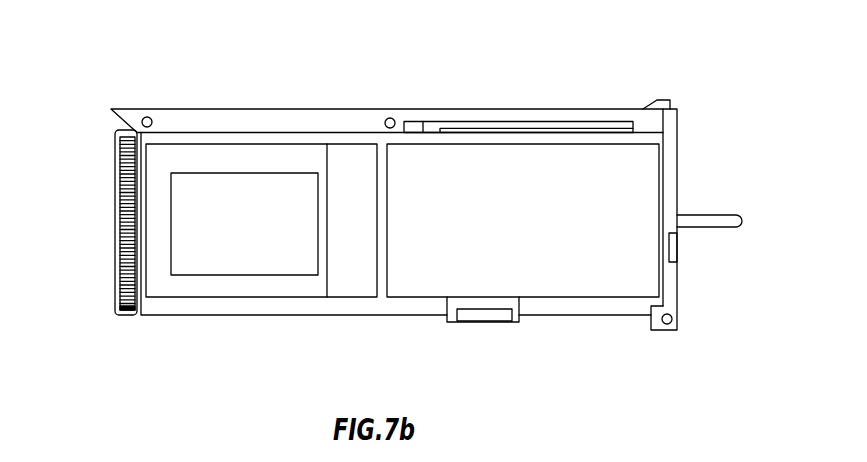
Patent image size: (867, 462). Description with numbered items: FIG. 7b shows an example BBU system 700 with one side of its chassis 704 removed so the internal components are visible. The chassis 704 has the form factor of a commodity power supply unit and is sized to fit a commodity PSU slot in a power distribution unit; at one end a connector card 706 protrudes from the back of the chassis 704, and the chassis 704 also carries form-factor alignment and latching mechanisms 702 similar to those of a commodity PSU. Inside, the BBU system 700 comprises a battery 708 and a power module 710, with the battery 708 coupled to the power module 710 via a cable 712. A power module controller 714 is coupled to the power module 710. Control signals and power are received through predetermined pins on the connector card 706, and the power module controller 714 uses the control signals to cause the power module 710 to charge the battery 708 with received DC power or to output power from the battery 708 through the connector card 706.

The BBU system 700 is at (454, 112).
The form-factor alignment and latching mechanisms 702 is at (648, 100).
The chassis 704 is at (346, 130).
The connector card 706 is at (115, 200).
The battery 708 is at (553, 270).
The power module 710 is at (247, 270).
The cable 712 is at (458, 323).
The power module controller 714 is at (332, 140).